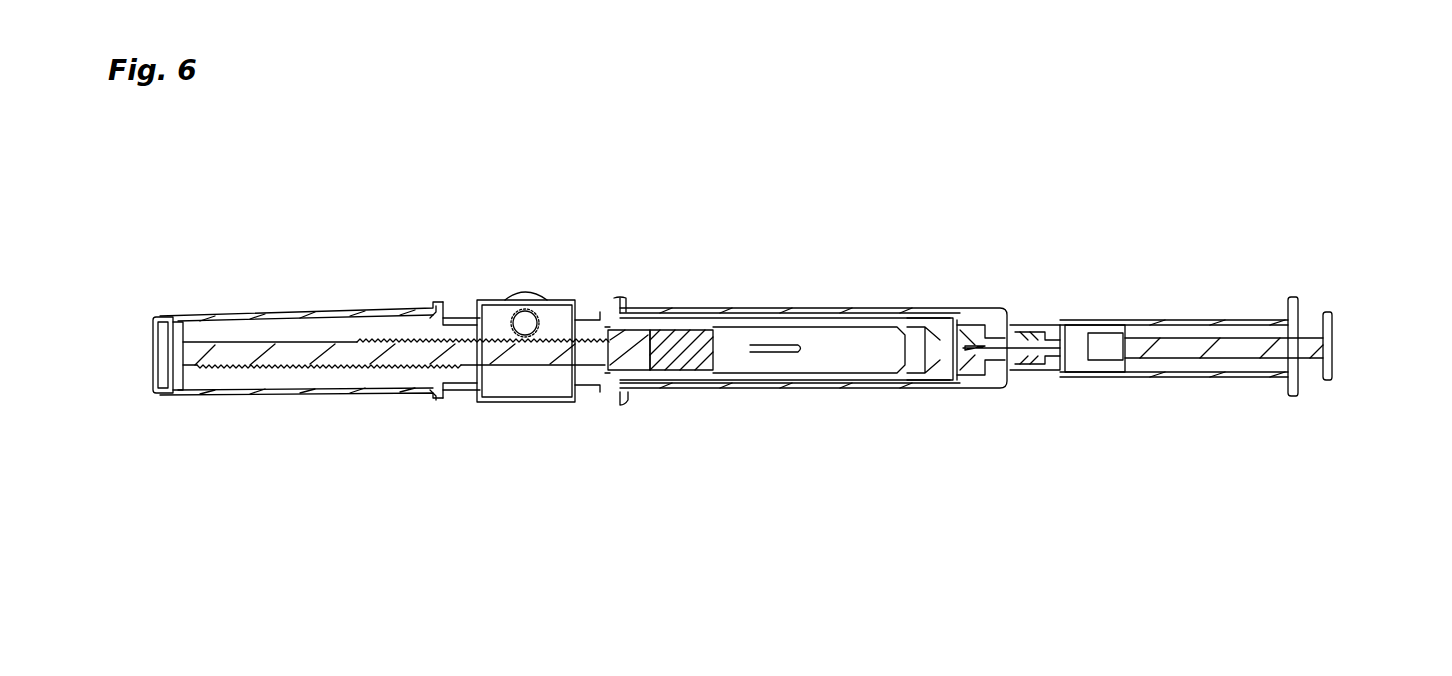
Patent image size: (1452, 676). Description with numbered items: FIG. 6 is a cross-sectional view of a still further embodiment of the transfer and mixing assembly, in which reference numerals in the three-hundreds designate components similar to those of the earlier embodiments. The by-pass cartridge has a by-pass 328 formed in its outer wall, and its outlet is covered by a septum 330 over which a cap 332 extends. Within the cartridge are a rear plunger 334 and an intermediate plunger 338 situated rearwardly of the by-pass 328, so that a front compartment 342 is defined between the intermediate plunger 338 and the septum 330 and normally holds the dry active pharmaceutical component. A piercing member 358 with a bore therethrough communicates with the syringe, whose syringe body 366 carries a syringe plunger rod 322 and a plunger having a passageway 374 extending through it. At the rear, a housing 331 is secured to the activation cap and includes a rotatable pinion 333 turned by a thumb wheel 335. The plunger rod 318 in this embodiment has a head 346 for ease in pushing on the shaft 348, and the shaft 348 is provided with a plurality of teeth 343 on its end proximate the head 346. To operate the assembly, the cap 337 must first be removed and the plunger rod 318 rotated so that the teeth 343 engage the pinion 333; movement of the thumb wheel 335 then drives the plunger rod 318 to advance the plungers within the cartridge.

The plunger rod 318 is at (305, 325).
The syringe plunger rod 322 is at (1347, 312).
The by-pass 328 is at (795, 345).
The septum 330 is at (930, 365).
The housing 331 is at (535, 400).
The cap 332 is at (958, 368).
The pinion 333 is at (520, 320).
The rear plunger 334 is at (638, 362).
The thumb wheel 335 is at (535, 291).
The cap 337 is at (158, 316).
The intermediate plunger 338 is at (742, 362).
The front compartment 342 is at (883, 362).
The teeth 343 is at (280, 368).
The head 346 is at (150, 393).
The shaft 348 is at (236, 348).
The piercing member 358 is at (987, 340).
The syringe body 366 is at (1198, 320).
The passageway 374 is at (1110, 333).